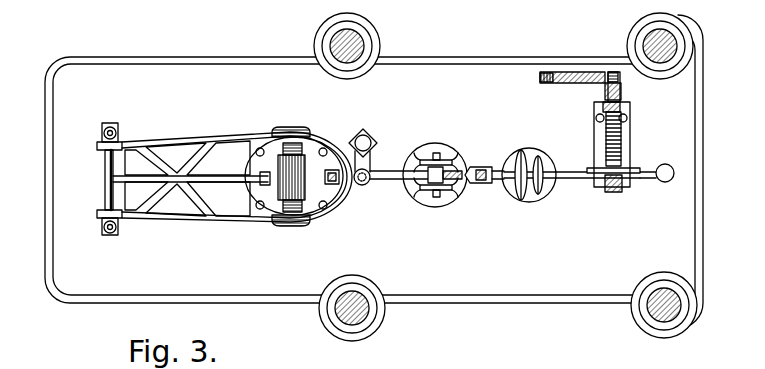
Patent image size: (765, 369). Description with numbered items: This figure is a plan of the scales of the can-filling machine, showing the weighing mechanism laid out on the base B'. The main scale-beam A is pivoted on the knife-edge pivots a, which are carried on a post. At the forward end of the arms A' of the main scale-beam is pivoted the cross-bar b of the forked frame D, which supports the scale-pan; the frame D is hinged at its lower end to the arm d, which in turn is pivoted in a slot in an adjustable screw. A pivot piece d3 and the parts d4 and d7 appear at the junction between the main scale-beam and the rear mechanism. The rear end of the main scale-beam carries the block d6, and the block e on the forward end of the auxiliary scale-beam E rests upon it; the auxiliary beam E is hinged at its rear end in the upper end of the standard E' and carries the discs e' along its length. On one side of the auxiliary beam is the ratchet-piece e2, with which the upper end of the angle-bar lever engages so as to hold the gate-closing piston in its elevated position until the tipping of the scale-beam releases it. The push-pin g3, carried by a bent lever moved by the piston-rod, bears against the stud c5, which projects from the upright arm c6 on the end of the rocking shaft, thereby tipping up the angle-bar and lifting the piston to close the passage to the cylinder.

The base plate B' is at (374, 177).
The arms of the main scale-beam A' is at (237, 182).
The forked frame D is at (118, 128).
The cross-bar b is at (105, 165).
The arm d is at (218, 177).
The knife-edge pivots a is at (298, 130).
The pivot link d3 is at (372, 138).
The main scale-beam A is at (399, 196).
The coupling wheel d4 is at (447, 150).
The threaded portion d7 is at (460, 185).
The block d6 is at (481, 166).
The block e is at (491, 193).
The pulley discs e' is at (529, 161).
The auxiliary scale-beam E is at (598, 192).
The standard E' is at (657, 190).
The ratchet-piece e2 is at (630, 168).
The push-pin g3 is at (608, 72).
The stud c5 is at (615, 70).
The upright arm c6 is at (622, 91).